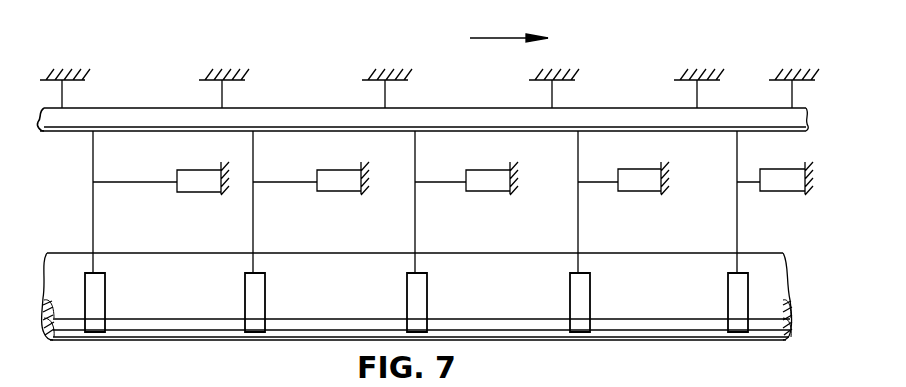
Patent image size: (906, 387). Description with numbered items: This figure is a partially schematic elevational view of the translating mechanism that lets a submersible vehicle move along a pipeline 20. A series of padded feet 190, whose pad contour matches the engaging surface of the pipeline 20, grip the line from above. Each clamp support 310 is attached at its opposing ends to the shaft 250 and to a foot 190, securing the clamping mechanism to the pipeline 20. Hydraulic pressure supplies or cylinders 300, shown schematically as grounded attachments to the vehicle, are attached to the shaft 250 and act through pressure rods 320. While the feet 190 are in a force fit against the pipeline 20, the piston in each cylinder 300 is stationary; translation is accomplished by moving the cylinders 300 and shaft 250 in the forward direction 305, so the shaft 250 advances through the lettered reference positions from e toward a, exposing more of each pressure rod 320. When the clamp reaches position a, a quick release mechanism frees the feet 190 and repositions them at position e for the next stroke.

The pipeline 20 is at (220, 328).
The padded feet 190 is at (737, 298).
The shaft 250 is at (273, 108).
The hydraulic pressure supply 300 is at (806, 178).
The forward direction 305 is at (490, 38).
The clamp support 310 is at (578, 222).
The pressure rod 320 is at (757, 184).